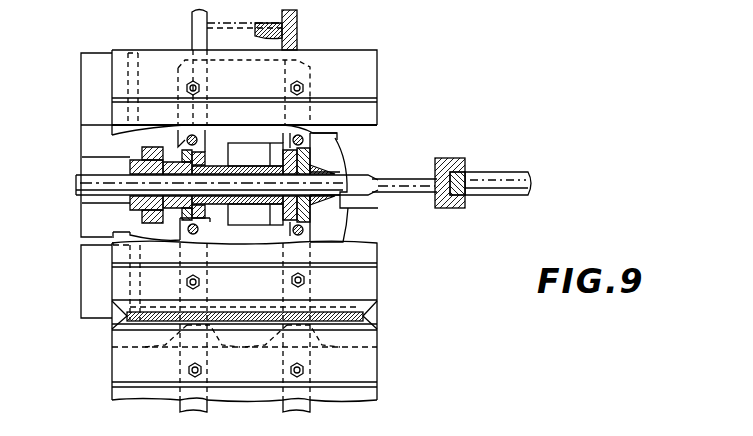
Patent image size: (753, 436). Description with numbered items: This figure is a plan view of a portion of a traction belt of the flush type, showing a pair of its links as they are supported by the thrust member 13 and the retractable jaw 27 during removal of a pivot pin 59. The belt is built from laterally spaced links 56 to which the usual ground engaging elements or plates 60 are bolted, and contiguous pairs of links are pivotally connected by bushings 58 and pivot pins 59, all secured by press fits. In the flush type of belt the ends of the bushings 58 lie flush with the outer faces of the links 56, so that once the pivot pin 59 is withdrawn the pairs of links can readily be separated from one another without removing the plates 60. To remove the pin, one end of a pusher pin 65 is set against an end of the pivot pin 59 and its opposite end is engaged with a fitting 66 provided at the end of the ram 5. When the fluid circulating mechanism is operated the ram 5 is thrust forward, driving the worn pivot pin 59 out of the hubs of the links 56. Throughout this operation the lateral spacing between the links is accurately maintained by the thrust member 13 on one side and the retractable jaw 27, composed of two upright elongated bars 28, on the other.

The ram 5 is at (508, 178).
The thrust member 13 is at (88, 97).
The retractable jaw 27 is at (276, 138).
The upright elongated bars 28 is at (245, 147).
The links 56 is at (192, 17).
The bushings 58 is at (219, 147).
The pivot pin 59 is at (112, 192).
The ground engaging elements or plates 60 is at (372, 70).
The pusher pin 65 is at (395, 177).
The fitting 66 is at (452, 160).